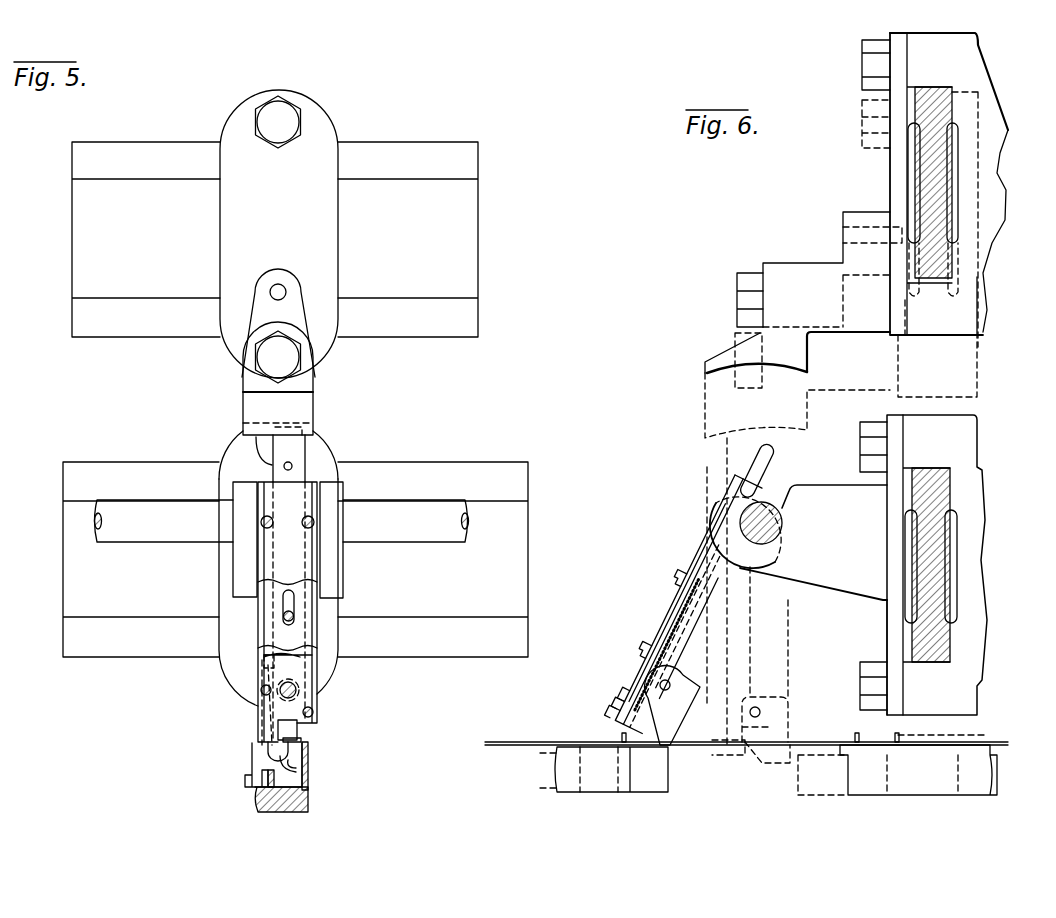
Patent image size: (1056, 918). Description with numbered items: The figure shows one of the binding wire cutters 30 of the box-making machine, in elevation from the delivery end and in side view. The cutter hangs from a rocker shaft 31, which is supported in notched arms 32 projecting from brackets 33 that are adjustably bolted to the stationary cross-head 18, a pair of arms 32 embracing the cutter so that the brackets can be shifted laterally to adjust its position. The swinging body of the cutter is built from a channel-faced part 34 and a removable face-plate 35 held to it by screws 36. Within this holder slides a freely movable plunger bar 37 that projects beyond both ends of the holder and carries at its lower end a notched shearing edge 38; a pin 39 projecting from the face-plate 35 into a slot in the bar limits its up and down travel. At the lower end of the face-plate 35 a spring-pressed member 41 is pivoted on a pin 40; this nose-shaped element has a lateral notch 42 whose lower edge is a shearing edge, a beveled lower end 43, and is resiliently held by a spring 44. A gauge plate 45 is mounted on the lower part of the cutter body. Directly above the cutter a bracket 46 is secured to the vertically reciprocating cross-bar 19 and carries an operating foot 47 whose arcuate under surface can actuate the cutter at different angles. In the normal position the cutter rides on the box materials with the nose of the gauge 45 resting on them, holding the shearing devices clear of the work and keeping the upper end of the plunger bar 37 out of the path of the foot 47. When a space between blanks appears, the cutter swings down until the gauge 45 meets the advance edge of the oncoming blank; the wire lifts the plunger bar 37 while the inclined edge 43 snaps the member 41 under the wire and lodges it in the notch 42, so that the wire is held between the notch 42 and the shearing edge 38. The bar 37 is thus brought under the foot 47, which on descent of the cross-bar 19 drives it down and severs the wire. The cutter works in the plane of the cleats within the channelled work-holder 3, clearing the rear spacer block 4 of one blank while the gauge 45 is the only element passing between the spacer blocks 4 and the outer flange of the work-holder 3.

In FIG. 5, the work-holder 3 is at (305, 800).
In FIG. 6, the work-holder 3 is at (746, 764).
In FIG. 5, the spacer blocks 4 is at (262, 762).
In FIG. 5, the stationary cross-head 18 is at (498, 470).
In FIG. 6, the stationary cross-head 18 is at (935, 588).
In FIG. 5, the vertically reciprocating cross-bar 19 is at (455, 237).
In FIG. 6, the vertically reciprocating cross-bar 19 is at (937, 219).
In FIG. 5, the wire cutter 30 is at (319, 612).
In FIG. 6, the wire cutter 30 is at (690, 548).
In FIG. 5, the rocker shaft 31 is at (400, 508).
In FIG. 6, the rocker shaft 31 is at (780, 507).
In FIG. 5, the notched arms 32 is at (338, 492).
In FIG. 6, the notched arms 32 is at (813, 591).
In FIG. 5, the brackets 33 is at (228, 442).
In FIG. 6, the brackets 33 is at (895, 633).
In FIG. 6, the channel-faced part 34 is at (682, 634).
In FIG. 5, the face-plate 35 is at (306, 667).
In FIG. 6, the face-plate 35 is at (708, 530).
In FIG. 5, the screws 36 is at (262, 521).
In FIG. 5, the plunger bar 37 is at (297, 452).
In FIG. 6, the plunger bar 37 is at (773, 453).
In FIG. 5, the notched shearing edge 38 is at (280, 755).
In FIG. 5, the pin 39 is at (286, 612).
In FIG. 6, the pin 39 is at (660, 578).
In FIG. 5, the pin 40 is at (297, 689).
In FIG. 6, the pin 40 is at (628, 638).
In FIG. 5, the spring-pressed member 41 is at (290, 728).
In FIG. 6, the spring-pressed member 41 is at (618, 680).
In FIG. 5, the lateral notch 42 is at (302, 738).
In FIG. 6, the lateral notch 42 is at (618, 692).
In FIG. 5, the beveled lower end 43 is at (292, 770).
In FIG. 6, the beveled lower end 43 is at (613, 707).
In FIG. 5, the spring 44 is at (262, 708).
In FIG. 6, the spring 44 is at (657, 617).
In FIG. 5, the gauge plate 45 is at (308, 757).
In FIG. 6, the gauge plate 45 is at (777, 718).
In FIG. 5, the bracket 46 is at (257, 305).
In FIG. 6, the bracket 46 is at (855, 223).
In FIG. 5, the operating foot 47 is at (305, 396).
In FIG. 6, the operating foot 47 is at (723, 418).